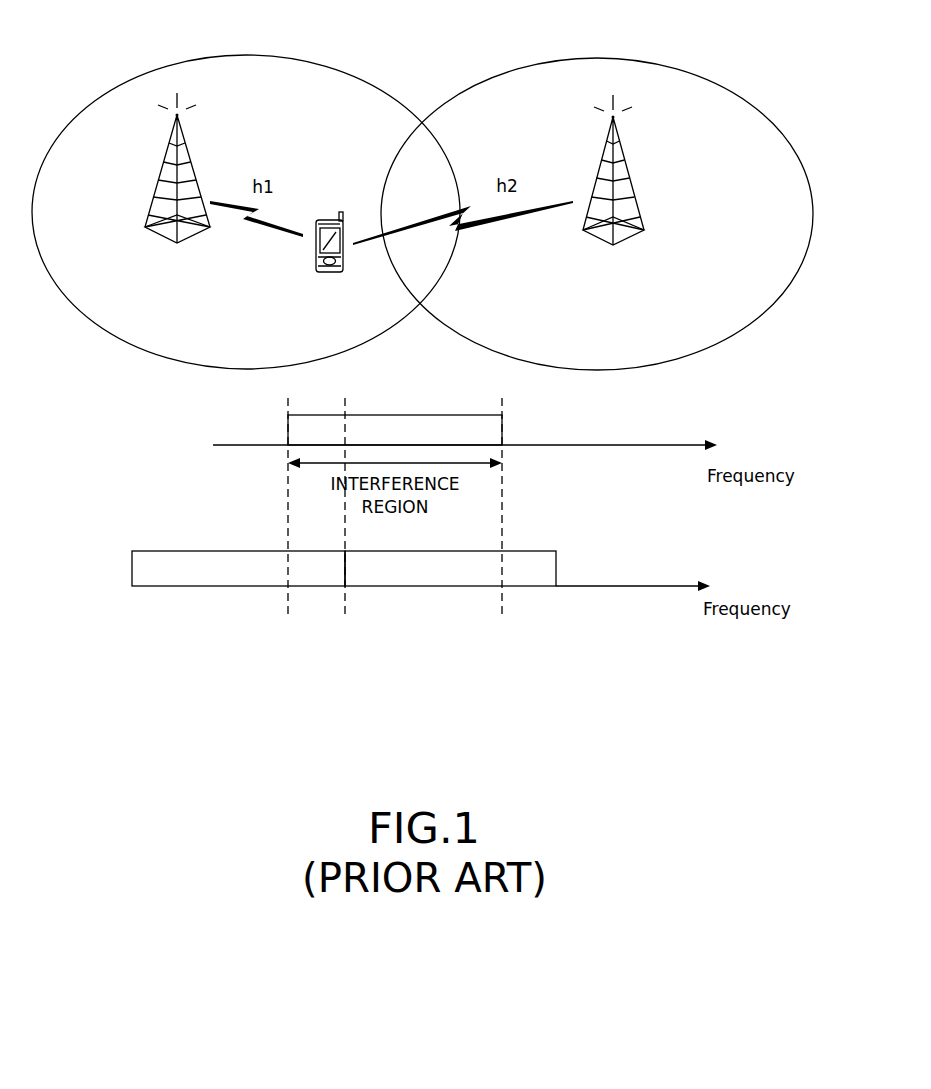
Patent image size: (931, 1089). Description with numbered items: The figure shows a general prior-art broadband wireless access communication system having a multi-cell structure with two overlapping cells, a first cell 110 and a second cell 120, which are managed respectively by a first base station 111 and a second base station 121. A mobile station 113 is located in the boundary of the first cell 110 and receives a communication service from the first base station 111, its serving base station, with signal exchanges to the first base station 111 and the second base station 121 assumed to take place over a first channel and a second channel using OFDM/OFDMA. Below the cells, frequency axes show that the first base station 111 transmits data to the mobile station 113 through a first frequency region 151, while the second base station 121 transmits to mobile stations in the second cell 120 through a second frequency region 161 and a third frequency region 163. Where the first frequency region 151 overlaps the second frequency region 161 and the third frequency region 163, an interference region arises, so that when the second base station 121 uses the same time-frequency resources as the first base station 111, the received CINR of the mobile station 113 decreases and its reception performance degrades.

The cell1 110 is at (244, 55).
The cell2 120 is at (596, 57).
The BS1 111 is at (161, 172).
The BS2 121 is at (633, 177).
The MS 113 is at (330, 274).
The frequency region (A-1) 151 is at (395, 430).
The frequency region (B-1) 161 is at (450, 568).
The frequency region (B-2) 163 is at (238, 568).